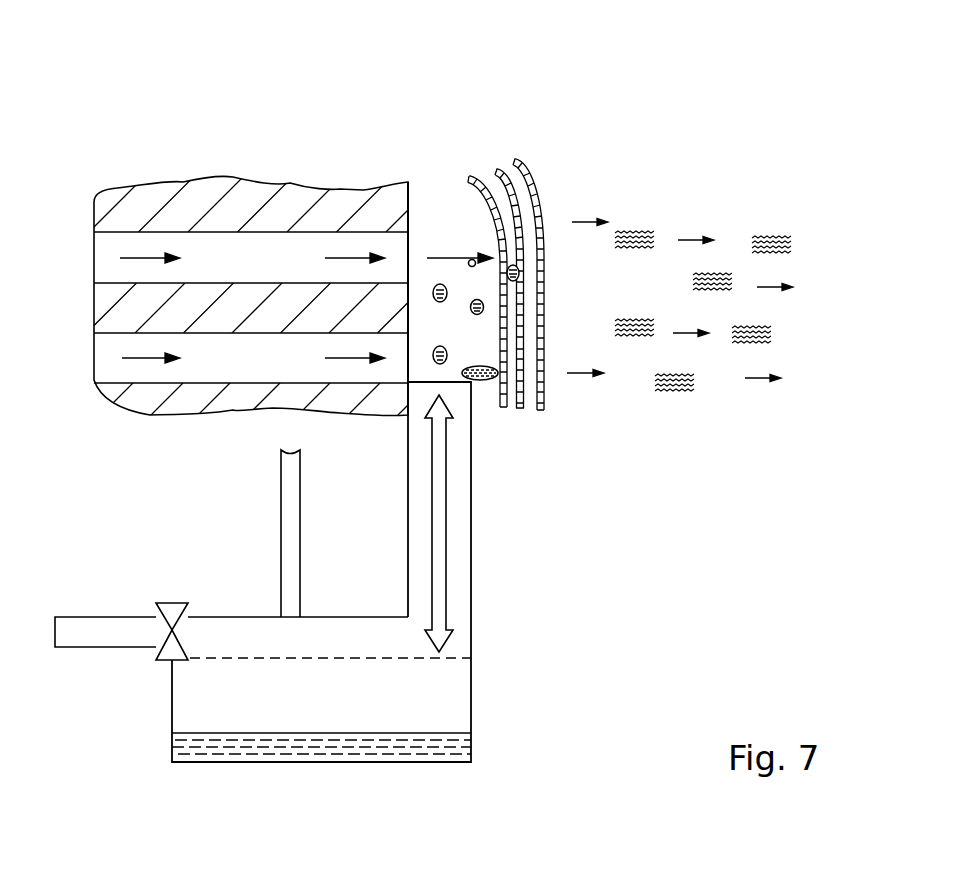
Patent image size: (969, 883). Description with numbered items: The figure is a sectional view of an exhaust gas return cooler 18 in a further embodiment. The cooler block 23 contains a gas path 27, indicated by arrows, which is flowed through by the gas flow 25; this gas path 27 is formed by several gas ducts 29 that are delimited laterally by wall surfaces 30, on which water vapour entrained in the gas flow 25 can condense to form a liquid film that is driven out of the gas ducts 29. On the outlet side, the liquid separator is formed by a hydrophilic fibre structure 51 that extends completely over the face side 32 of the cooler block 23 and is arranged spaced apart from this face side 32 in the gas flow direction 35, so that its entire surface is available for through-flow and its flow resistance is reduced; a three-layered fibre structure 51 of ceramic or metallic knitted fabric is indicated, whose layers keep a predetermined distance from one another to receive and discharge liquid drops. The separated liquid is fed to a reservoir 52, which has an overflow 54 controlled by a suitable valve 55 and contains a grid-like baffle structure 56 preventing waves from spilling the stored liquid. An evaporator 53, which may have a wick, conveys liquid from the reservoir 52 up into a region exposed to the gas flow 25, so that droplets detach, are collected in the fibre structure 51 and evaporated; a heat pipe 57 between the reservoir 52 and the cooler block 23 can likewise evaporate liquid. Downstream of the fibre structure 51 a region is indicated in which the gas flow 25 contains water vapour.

The exhaust gas return cooler 18 is at (726, 166).
The cooler block 23 is at (113, 197).
The gas flow 25 is at (345, 257).
The gas path 27 is at (142, 255).
The gas ducts 29 is at (293, 248).
The wall surfaces 30 is at (253, 280).
The face side 32 is at (408, 182).
The gas flow direction 35 is at (453, 257).
The hydrophilic fibre structure 51 is at (556, 279).
The reservoir 52 is at (471, 695).
The evaporator 53 is at (440, 523).
The overflow 54 is at (103, 627).
The valve 55 is at (168, 610).
The baffle structure 56 is at (220, 660).
The heat pipe 57 is at (300, 518).